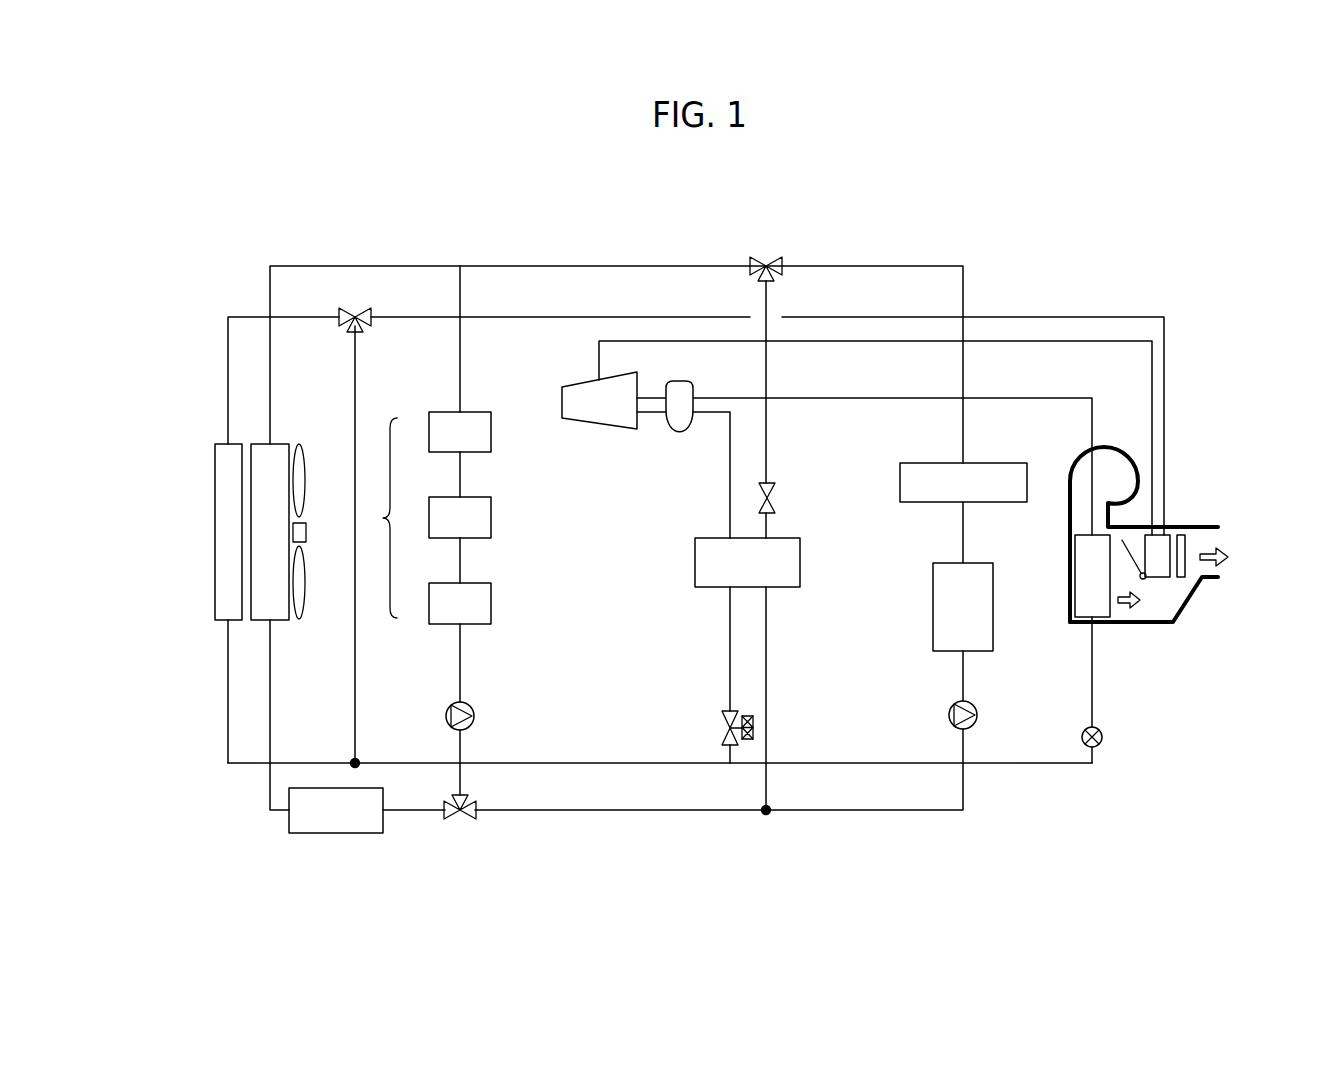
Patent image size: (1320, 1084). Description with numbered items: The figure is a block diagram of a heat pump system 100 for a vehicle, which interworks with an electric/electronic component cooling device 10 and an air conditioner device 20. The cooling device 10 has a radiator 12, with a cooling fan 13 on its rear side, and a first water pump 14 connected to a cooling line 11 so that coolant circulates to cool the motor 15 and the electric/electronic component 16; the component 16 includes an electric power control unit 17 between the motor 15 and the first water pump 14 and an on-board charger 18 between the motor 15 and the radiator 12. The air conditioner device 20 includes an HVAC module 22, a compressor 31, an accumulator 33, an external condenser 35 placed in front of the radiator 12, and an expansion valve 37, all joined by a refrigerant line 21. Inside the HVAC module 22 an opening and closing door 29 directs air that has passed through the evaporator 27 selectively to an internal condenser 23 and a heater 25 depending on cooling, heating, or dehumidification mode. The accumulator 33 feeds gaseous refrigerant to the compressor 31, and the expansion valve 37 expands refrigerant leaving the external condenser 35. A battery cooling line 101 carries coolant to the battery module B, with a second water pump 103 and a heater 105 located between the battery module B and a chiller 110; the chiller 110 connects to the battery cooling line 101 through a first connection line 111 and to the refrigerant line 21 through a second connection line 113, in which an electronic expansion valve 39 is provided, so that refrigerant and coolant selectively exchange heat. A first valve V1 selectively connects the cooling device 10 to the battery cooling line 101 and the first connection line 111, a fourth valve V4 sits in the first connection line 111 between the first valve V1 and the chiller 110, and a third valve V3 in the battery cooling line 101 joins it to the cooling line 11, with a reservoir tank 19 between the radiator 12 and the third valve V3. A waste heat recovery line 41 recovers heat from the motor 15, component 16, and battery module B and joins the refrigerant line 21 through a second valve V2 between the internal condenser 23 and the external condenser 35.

The electric/electronic component cooling device 10 is at (315, 262).
The heat pump system 100 is at (712, 208).
The cooling line 11 is at (460, 342).
The first valve V1 is at (758, 275).
The battery cooling line 101 is at (963, 368).
The second valve V2 is at (354, 311).
The refrigerant line 21 is at (228, 353).
The air conditioner device 20 is at (218, 697).
The waste heat recovery line 41 is at (355, 663).
The external condenser 35 is at (215, 532).
The radiator 12 is at (277, 621).
The cooling fan 13 is at (306, 533).
The electric/electronic component 16 is at (445, 557).
The on-board charger 18 is at (429, 433).
The motor 15 is at (491, 518).
The electric power control unit 17 is at (429, 604).
The first water pump 14 is at (471, 707).
The reservoir tank 19 is at (288, 823).
The third valve V3 is at (459, 823).
The compressor 31 is at (600, 430).
The accumulator 33 is at (681, 433).
The heater 105 is at (1007, 463).
The second connection line 113 is at (730, 506).
The first connection line 111 is at (767, 438).
The fourth valve V4 is at (775, 500).
The chiller 110 is at (800, 565).
The electronic expansion valve 39 is at (748, 741).
The battery module B is at (993, 605).
The second water pump 103 is at (977, 715).
The expansion valve 37 is at (1102, 737).
The HVAC module 22 is at (1153, 564).
The evaporator 27 is at (1110, 612).
The internal condenser 23 is at (1175, 580).
The heater 25 is at (1186, 575).
The opening and closing door 29 is at (1133, 565).